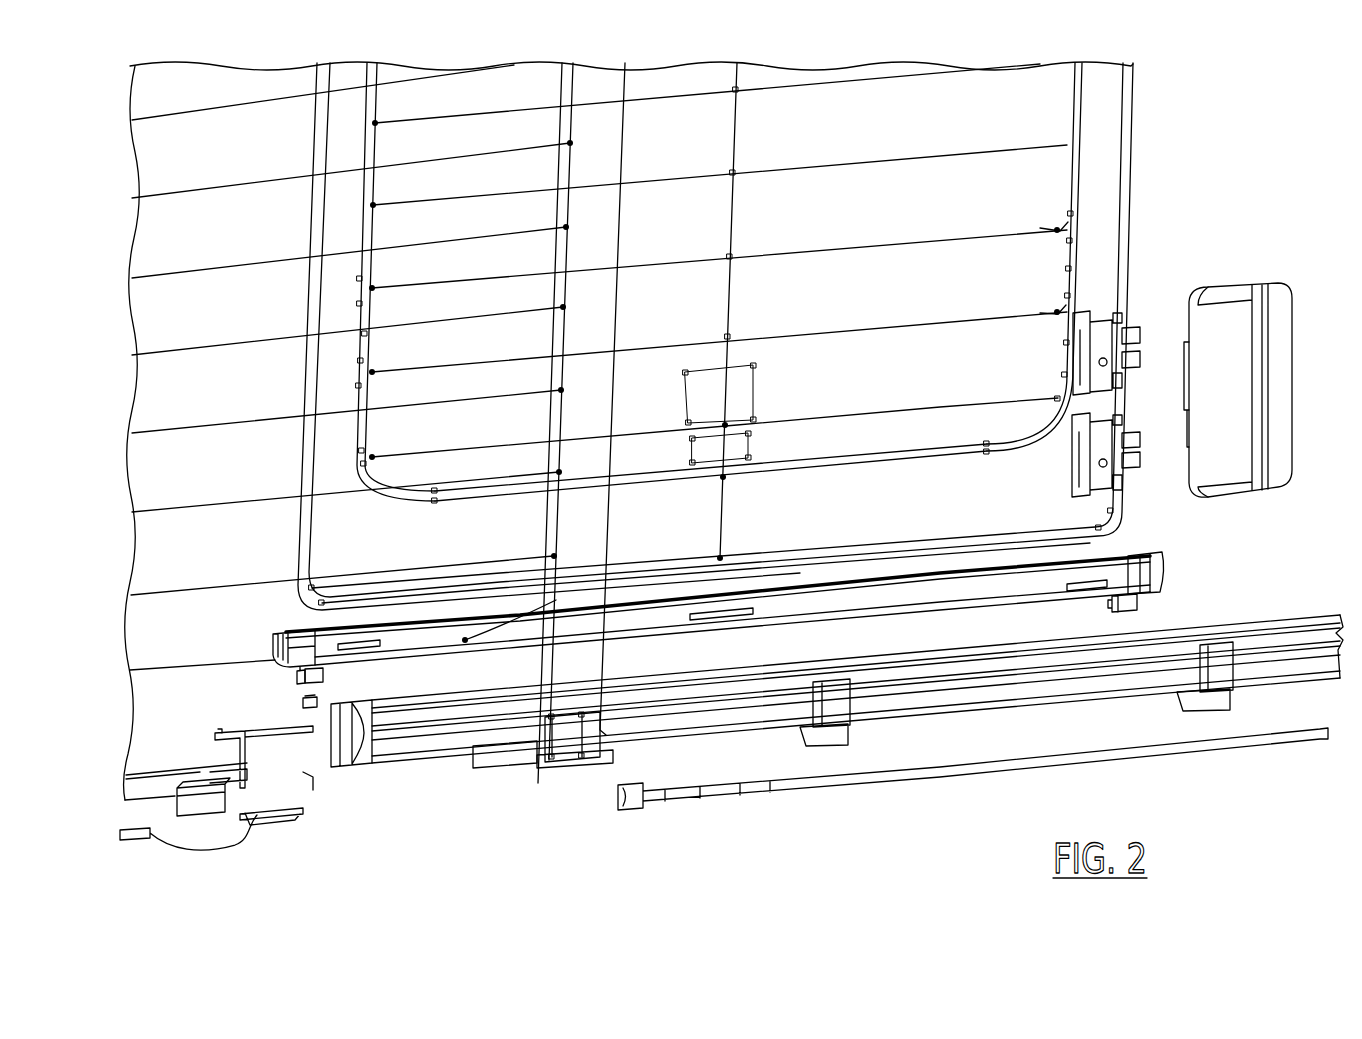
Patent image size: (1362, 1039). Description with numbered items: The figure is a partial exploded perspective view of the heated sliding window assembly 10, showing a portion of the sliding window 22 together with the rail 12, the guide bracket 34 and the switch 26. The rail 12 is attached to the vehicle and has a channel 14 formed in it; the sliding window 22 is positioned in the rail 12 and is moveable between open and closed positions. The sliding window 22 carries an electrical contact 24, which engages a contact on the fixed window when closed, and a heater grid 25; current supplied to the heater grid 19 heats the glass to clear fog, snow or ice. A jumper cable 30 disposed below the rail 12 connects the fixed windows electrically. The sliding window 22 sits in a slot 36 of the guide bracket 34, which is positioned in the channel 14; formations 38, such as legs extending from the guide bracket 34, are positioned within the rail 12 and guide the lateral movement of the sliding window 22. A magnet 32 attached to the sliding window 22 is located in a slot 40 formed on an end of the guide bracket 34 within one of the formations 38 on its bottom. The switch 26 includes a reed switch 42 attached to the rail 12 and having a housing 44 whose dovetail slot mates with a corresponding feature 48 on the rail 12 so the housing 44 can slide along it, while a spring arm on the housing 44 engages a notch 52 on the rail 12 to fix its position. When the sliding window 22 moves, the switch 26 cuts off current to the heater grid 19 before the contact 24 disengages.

The heated sliding window assembly 10 is at (803, 797).
The rail 12 is at (657, 733).
The channel 14 is at (340, 765).
The heater grid 19 is at (153, 277).
The sliding window 22 is at (1118, 528).
The electrical contact 24 is at (1125, 318).
The heater grid 25 is at (1278, 368).
The switch 26 is at (268, 825).
The jumper cable 30 is at (323, 677).
The magnet 32 is at (365, 760).
The guide bracket 34 is at (1105, 557).
The slot 36 is at (720, 594).
The formations 38 is at (1117, 605).
The slot 40 is at (300, 681).
The reed switch 42 is at (298, 821).
The housing 44 is at (303, 773).
The corresponding feature 48 is at (500, 737).
The notch 52 is at (537, 770).